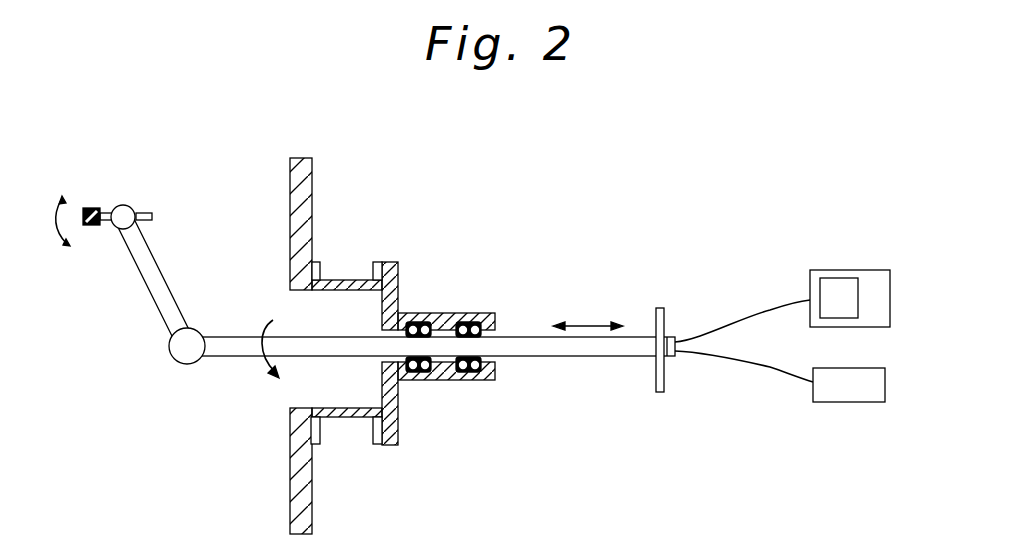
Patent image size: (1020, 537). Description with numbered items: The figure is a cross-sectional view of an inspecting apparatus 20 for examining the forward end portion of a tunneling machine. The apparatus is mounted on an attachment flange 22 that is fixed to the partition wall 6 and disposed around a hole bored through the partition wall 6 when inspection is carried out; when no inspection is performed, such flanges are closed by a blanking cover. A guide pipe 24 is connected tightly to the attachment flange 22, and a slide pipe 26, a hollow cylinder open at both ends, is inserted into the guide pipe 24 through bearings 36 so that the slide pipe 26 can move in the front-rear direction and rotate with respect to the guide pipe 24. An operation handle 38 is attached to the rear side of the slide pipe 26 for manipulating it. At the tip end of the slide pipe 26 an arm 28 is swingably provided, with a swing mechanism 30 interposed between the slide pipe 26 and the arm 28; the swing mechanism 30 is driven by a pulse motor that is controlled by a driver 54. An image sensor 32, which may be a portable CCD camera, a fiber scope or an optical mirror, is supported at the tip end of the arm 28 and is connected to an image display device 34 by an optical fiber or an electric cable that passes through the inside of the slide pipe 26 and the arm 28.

The partition wall 6 is at (307, 198).
The inspecting apparatus 20 is at (513, 410).
The attachment flange 22 is at (355, 280).
The guide pipe 24 is at (445, 313).
The slide pipe 26 is at (582, 356).
The arm 28 is at (155, 272).
The swing mechanism 30 is at (172, 360).
The image sensor 32 is at (97, 208).
The image display device 34 is at (832, 270).
The bearings 36 is at (470, 315).
The operation handle 38 is at (667, 320).
The driver 54 is at (847, 403).